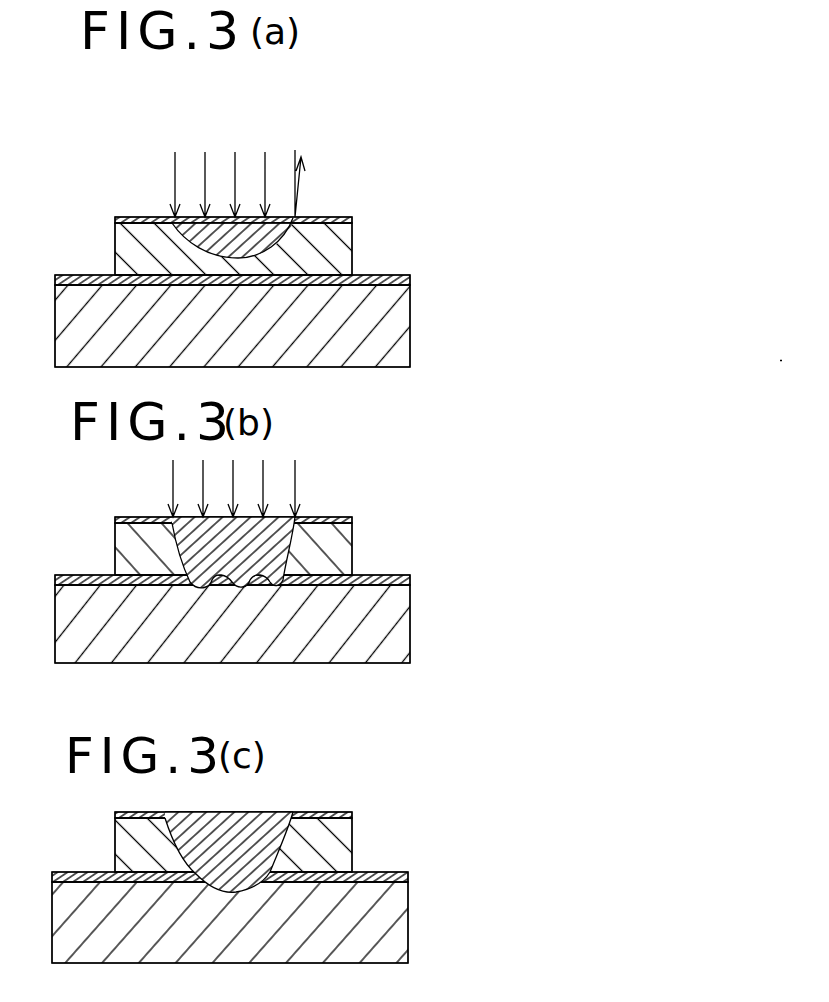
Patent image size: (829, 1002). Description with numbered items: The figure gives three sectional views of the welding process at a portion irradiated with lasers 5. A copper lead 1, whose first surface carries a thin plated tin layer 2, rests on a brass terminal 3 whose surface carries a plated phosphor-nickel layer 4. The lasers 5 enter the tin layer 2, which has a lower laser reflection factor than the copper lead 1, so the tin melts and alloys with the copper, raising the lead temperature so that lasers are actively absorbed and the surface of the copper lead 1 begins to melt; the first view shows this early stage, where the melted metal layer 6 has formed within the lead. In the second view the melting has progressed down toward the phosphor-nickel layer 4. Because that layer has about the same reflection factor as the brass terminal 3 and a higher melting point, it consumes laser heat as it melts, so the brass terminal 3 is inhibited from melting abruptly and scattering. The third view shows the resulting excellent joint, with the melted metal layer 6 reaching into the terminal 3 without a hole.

In FIG. 3A, the copper lead 1 is at (342, 250).
In FIG. 3B, the copper lead 1 is at (342, 553).
In FIG. 3C, the copper lead 1 is at (342, 850).
In FIG. 3A, the tin layer 2 is at (352, 220).
In FIG. 3B, the tin layer 2 is at (348, 520).
In FIG. 3C, the tin layer 2 is at (347, 817).
In FIG. 3A, the brass terminal 3 is at (390, 335).
In FIG. 3B, the brass terminal 3 is at (403, 637).
In FIG. 3C, the brass terminal 3 is at (397, 920).
In FIG. 3A, the phosphor-nickel layer 4 is at (403, 283).
In FIG. 3B, the phosphor-nickel layer 4 is at (400, 583).
In FIG. 3C, the phosphor-nickel layer 4 is at (398, 877).
In FIG. 3A, the lasers 5 is at (240, 158).
In FIG. 3B, the lasers 5 is at (238, 468).
In FIG. 3A, the metal layer melted by lasers 6 is at (270, 242).
In FIG. 3B, the metal layer melted by lasers 6 is at (283, 547).
In FIG. 3C, the metal layer melted by lasers 6 is at (280, 833).